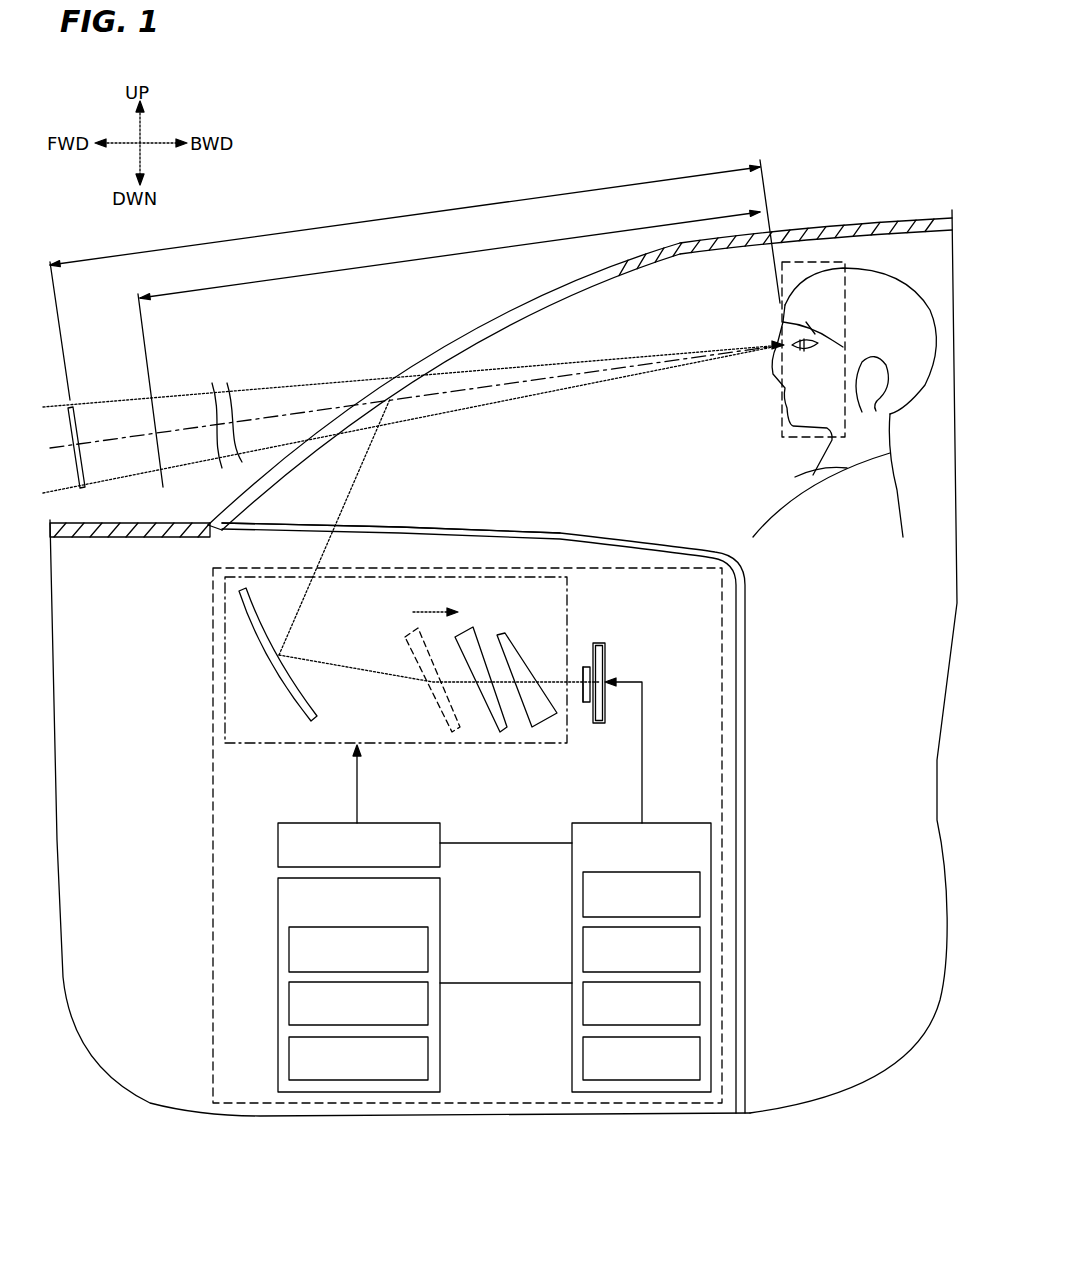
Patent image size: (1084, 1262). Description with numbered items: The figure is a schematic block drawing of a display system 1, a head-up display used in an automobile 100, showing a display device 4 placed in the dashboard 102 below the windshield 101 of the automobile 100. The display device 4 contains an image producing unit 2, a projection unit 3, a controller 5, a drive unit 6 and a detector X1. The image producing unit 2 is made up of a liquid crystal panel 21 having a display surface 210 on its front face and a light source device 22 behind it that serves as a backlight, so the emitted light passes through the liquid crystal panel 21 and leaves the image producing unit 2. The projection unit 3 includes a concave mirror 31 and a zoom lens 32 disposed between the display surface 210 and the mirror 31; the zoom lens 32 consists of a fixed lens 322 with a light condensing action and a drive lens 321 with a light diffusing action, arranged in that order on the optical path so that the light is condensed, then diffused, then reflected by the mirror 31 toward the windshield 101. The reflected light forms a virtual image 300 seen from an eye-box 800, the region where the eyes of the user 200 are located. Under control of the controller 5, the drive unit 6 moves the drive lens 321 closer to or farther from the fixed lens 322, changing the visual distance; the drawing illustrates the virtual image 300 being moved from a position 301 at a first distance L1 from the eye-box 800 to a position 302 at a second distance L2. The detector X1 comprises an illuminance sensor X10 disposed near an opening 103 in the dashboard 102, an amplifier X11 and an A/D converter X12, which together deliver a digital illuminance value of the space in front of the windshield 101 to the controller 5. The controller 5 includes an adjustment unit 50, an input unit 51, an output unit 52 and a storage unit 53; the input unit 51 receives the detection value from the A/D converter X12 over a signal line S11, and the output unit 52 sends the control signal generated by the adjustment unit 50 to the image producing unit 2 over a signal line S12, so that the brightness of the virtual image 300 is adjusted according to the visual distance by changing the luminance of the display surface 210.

The display system 1 is at (192, 841).
The image producing unit 2 is at (597, 716).
The projection unit 3 is at (412, 609).
The display device 4 is at (212, 767).
The controller 5 is at (620, 938).
The drive unit 6 is at (391, 822).
The liquid crystal panel 21 is at (587, 705).
The light source device 22 is at (603, 726).
The mirror 31 is at (285, 693).
The zoom lens 32 is at (481, 723).
The adjustment unit 50 is at (583, 906).
The input unit 51 is at (583, 950).
The output unit 52 is at (583, 1013).
The storage unit 53 is at (583, 1061).
The automobile 100 is at (921, 197).
The windshield 101 is at (486, 334).
The dashboard 102 is at (513, 801).
The opening 103 is at (389, 526).
The user 200 is at (844, 392).
The display surface 210 is at (578, 664).
The virtual image 300 is at (155, 407).
The virtual image at first distance 301 is at (153, 410).
The virtual image at second distance 302 is at (73, 407).
The drive lens 321 is at (493, 704).
The fixed lens 322 is at (532, 710).
The eye-box 800 is at (845, 311).
The detector X1 is at (334, 985).
The illuminance sensor X10 is at (289, 948).
The amplifier X11 is at (289, 1002).
The A/D converter X12 is at (289, 1056).
The signal line S11 is at (506, 971).
The signal line S12 is at (645, 750).
The first distance L1 is at (449, 348).
The second distance L2 is at (415, 280).